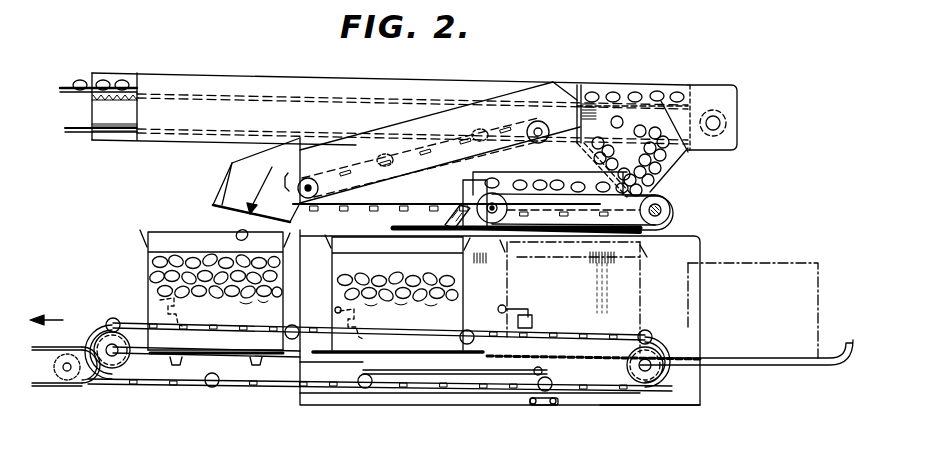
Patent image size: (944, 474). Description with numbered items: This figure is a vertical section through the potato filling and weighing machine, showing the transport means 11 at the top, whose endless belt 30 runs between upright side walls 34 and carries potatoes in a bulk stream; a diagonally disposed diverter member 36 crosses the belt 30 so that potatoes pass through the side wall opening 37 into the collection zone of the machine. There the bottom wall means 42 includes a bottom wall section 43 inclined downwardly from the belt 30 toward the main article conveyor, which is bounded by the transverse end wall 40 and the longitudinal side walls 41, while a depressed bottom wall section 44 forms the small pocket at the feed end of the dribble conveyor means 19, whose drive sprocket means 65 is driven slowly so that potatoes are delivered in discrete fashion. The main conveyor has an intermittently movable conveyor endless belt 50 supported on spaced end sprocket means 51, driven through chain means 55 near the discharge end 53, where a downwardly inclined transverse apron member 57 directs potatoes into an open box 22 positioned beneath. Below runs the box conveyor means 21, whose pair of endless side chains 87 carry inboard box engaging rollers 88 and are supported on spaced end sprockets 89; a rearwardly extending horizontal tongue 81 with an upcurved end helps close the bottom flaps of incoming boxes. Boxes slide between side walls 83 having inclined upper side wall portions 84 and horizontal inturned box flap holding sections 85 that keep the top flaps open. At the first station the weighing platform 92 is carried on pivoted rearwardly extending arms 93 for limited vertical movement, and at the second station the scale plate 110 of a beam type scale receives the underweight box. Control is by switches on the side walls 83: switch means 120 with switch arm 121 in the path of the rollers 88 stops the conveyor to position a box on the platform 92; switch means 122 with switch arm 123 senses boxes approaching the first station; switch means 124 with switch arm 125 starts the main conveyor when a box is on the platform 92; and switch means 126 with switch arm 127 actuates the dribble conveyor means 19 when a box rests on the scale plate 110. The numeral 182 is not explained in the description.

The transport means 11 is at (246, 86).
The dribble conveyor means 19 is at (442, 133).
The box conveyor means 21 is at (264, 398).
The box 22 is at (148, 268).
The endless belt 30 is at (70, 87).
The side wall 34 is at (128, 76).
The diverter member 36 is at (670, 90).
The side wall opening 37 is at (585, 96).
The transverse end wall 40 is at (691, 99).
The longitudinal side walls 41 is at (491, 178).
The bottom wall means 42 is at (678, 179).
The bottom wall section 43 is at (684, 160).
The depressed bottom wall section 44 is at (603, 170).
The conveyor endless belt 50 is at (672, 205).
The end sprocket means 51 is at (486, 224).
The discharge end 53 is at (504, 178).
The chain means 55 is at (460, 206).
The transverse apron member 57 is at (473, 207).
The drive sprocket means 65 is at (421, 158).
The horizontal tongue 81 is at (842, 345).
The side walls 83 is at (666, 288).
The inclined upper side wall portions 84 is at (667, 245).
The box flap holding sections 85 is at (702, 240).
The endless side chains 87 is at (633, 398).
The box engaging rollers 88 is at (212, 388).
The end sprockets 89 is at (660, 378).
The weighing platform 92 is at (404, 352).
The arms 93 is at (436, 375).
The scale plate 110 is at (148, 356).
The switch means 120 is at (545, 406).
The switch arm 121 is at (548, 390).
The switch means 122 is at (534, 321).
The switch arm 123 is at (522, 307).
The switch means 124 is at (363, 336).
The switch arm 125 is at (333, 322).
The switch means 126 is at (180, 326).
The switch arm 127 is at (148, 308).
The pivot ring 182 is at (590, 368).